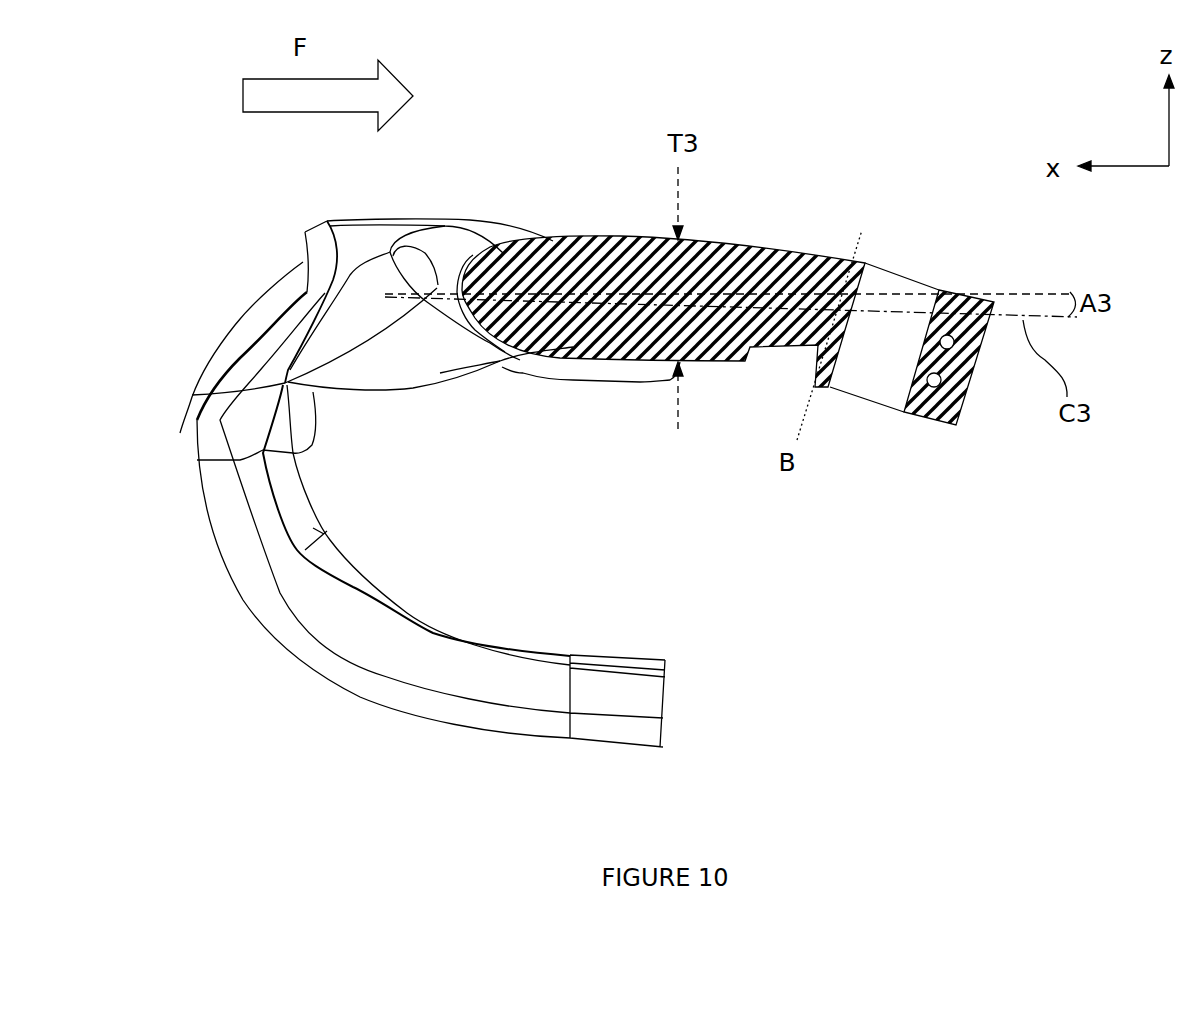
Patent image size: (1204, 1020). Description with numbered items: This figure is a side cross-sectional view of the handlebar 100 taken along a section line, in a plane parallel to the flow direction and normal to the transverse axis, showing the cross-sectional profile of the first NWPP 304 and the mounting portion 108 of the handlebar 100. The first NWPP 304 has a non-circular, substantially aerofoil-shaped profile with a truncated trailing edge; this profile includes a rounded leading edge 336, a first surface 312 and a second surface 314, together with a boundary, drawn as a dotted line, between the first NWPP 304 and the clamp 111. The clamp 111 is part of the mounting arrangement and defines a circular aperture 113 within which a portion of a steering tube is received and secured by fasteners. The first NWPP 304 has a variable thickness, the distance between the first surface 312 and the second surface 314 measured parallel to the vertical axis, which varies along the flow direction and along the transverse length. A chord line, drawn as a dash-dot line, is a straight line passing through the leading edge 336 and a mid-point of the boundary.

The handlebar 100 is at (750, 118).
The mounting portion 108 is at (846, 222).
The clamp 111 is at (930, 412).
The circular aperture 113 is at (872, 383).
The first NWPP 304 is at (633, 407).
The first surface 312 is at (620, 240).
The second surface 314 is at (563, 380).
The rounded leading edge 336 is at (330, 226).